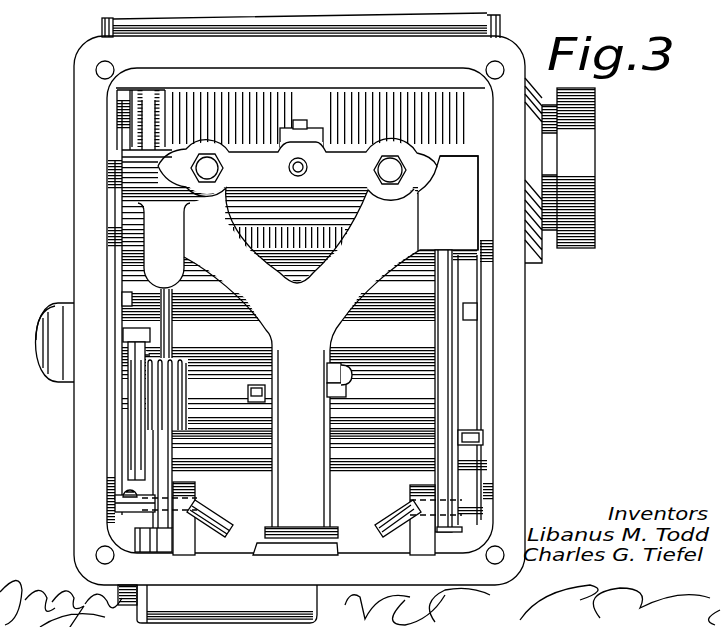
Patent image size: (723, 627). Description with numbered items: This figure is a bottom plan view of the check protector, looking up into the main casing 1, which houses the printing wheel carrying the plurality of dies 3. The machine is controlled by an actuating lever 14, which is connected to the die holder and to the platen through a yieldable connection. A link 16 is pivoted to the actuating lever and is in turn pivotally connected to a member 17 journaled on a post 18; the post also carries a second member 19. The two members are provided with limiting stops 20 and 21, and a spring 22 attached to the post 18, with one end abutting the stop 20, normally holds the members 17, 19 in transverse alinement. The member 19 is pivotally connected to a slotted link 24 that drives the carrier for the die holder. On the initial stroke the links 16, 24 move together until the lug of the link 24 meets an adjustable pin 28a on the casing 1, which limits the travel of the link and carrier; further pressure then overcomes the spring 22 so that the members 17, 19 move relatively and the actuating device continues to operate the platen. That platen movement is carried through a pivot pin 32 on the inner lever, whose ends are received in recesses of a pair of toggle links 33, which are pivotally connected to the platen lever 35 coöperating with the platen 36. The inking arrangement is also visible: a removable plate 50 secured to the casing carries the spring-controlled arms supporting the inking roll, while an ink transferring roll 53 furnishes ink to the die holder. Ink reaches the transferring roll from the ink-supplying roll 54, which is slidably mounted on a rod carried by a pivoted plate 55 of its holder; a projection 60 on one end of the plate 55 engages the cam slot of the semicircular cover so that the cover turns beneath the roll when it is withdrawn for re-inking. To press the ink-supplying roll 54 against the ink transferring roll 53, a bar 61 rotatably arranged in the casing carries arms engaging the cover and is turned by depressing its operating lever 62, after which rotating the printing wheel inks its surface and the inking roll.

The main casing 1 is at (281, 310).
The dies 3 is at (480, 297).
The lever 14 is at (217, 604).
The link 16 is at (143, 522).
The member 17 is at (133, 390).
The post 18 is at (188, 404).
The member 19 is at (127, 370).
The limiting stop 20 is at (133, 340).
The limiting stop 21 is at (143, 325).
The spring 22 is at (172, 362).
The link 24 is at (125, 298).
The adjustable pin 28a is at (128, 490).
The pivot pin 32 is at (345, 392).
The toggle links 33 is at (323, 481).
The platen lever 35 is at (308, 339).
The platen 36 is at (459, 202).
The removable plate 50 is at (301, 24).
The ink transferring roll 53 is at (289, 277).
The ink-supplying roll 54 is at (440, 390).
The plate 55 is at (408, 438).
The projection 60 is at (465, 441).
The bar 61 is at (354, 445).
The operating lever 62 is at (52, 362).